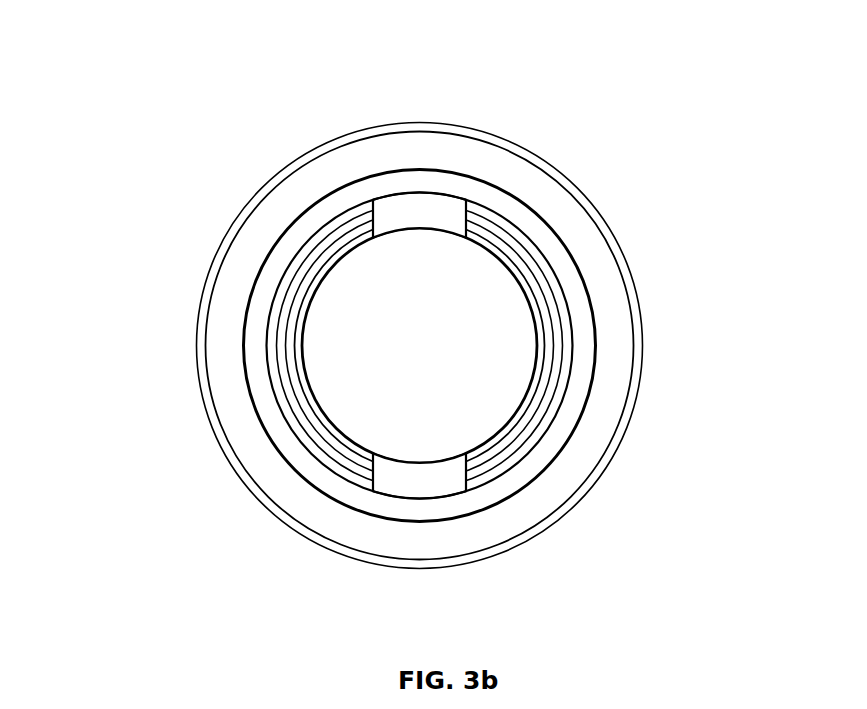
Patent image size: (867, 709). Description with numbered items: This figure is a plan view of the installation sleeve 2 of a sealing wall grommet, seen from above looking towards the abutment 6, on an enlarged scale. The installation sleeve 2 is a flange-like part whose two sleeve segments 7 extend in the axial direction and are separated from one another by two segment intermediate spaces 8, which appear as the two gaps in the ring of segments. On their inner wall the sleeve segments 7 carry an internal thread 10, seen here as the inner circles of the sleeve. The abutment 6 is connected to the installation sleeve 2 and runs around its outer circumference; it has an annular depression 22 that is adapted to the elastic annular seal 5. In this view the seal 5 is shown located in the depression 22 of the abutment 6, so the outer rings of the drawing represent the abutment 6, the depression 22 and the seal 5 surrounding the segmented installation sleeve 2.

The installation sleeve 2 is at (413, 338).
The seal 5 is at (603, 400).
The abutment 6 is at (640, 284).
The sleeve segments 7 is at (272, 364).
The segment intermediate spaces 8 is at (412, 215).
The internal thread 10 is at (522, 305).
The annular depression 22 is at (542, 152).